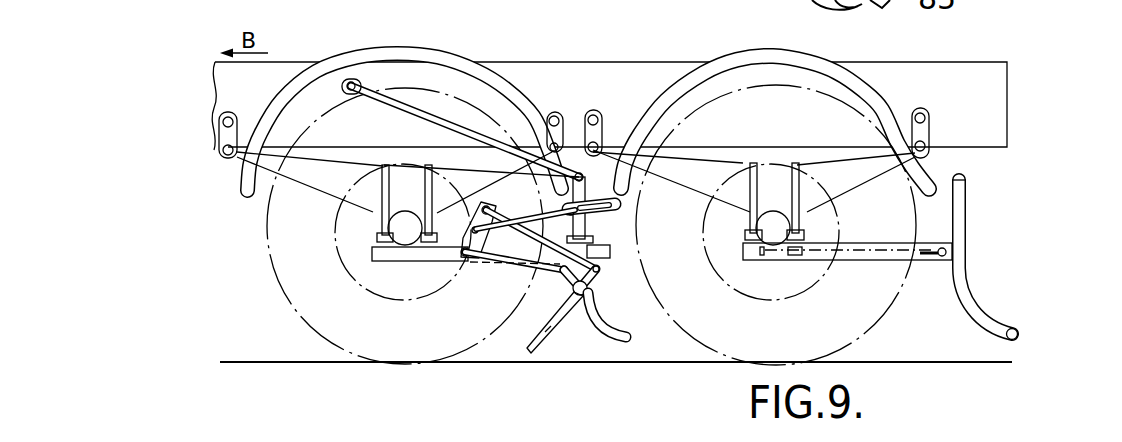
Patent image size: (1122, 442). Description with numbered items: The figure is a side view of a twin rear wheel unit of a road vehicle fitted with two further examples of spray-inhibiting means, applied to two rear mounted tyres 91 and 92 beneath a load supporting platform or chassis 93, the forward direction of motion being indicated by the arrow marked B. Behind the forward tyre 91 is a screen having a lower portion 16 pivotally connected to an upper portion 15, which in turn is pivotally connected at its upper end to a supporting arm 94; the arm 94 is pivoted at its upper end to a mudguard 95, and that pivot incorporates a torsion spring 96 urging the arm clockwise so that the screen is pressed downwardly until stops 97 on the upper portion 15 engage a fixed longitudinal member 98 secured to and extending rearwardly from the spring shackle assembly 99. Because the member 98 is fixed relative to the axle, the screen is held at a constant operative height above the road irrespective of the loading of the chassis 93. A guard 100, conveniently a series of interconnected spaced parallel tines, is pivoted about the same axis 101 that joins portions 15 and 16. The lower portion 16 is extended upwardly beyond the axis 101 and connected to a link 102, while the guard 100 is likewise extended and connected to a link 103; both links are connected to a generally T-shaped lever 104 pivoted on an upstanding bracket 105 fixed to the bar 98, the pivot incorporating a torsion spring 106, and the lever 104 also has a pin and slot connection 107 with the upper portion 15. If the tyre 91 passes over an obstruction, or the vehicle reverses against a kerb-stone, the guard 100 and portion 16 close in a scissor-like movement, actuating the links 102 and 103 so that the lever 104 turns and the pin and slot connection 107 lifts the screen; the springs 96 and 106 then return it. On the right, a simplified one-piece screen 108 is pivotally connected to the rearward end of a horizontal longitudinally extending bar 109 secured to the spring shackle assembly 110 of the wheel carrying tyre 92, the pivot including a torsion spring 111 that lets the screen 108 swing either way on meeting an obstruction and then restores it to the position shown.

The upper portion of screen 15 is at (582, 219).
The lower portion of screen 16 is at (608, 332).
The tyre 91 is at (290, 311).
The tyre 92 is at (872, 331).
The load supporting platform or chassis 93 is at (633, 90).
The supporting arm 94 is at (405, 108).
The mudguard 95 is at (312, 88).
The torsion spring 96 is at (356, 80).
The stops 97 is at (594, 239).
The fixed longitudinal member 98 is at (372, 255).
The spring shackle assembly 99 is at (410, 153).
The guard 100 is at (549, 329).
The pivotal axis 101 is at (588, 285).
The link 102 is at (528, 285).
The link 103 is at (541, 268).
The T-shaped lever 104 is at (546, 145).
The upstanding bracket 105 is at (463, 258).
The torsion spring 106 is at (490, 225).
The pin and slot connection 107 is at (578, 173).
The screen 108 is at (966, 307).
The horizontal longitudinally extending bar 109 is at (860, 261).
The spring shackle assembly 110 is at (793, 160).
The torsion spring 111 is at (933, 262).